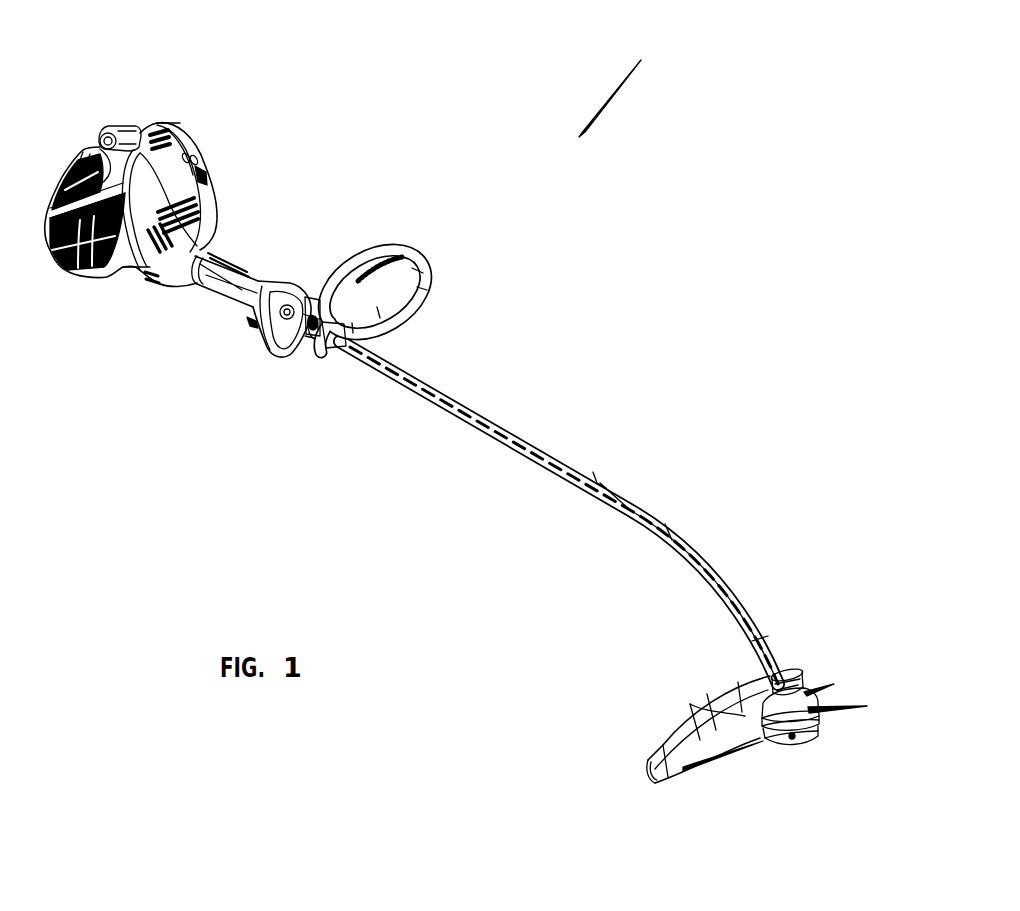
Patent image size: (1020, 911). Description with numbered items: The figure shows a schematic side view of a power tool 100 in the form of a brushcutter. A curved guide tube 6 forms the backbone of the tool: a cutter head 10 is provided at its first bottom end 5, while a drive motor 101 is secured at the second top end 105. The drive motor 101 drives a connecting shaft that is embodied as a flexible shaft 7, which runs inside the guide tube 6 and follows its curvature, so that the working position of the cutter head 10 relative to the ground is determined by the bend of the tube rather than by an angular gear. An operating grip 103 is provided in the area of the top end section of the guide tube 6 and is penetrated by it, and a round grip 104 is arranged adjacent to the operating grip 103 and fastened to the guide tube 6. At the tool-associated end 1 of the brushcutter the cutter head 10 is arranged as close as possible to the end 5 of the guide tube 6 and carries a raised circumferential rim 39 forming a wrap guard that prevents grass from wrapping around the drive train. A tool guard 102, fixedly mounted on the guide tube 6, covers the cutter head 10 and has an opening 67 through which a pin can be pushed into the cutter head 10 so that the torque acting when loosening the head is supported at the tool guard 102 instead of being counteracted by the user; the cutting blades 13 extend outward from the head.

The power tool 100 is at (497, 198).
The drive motor 101 is at (173, 188).
The operating grip 103 is at (222, 271).
The round grip 104 is at (372, 264).
The second top end 105 is at (337, 362).
The flexible shaft 7 is at (489, 420).
The guide tube 6 is at (557, 455).
The tool guard 102 is at (720, 701).
The tool-associated end 1 is at (780, 668).
The first bottom end 5 is at (781, 672).
The opening 67 is at (793, 676).
The raised circumferential rim 39 is at (801, 697).
The cutter head 10 is at (804, 746).
The cutting blades 13 is at (841, 712).